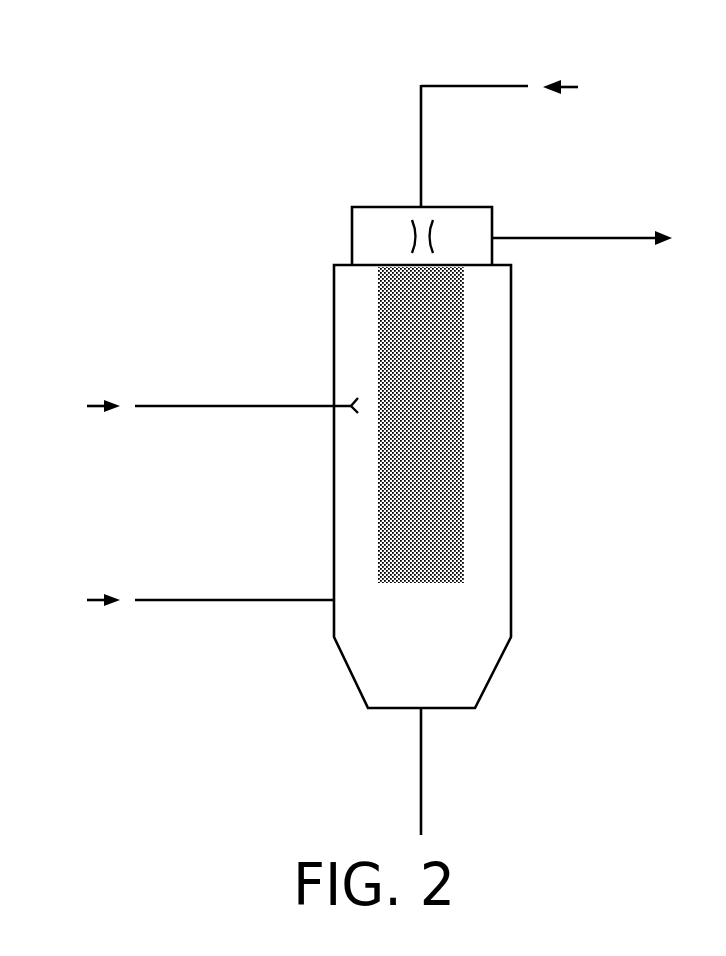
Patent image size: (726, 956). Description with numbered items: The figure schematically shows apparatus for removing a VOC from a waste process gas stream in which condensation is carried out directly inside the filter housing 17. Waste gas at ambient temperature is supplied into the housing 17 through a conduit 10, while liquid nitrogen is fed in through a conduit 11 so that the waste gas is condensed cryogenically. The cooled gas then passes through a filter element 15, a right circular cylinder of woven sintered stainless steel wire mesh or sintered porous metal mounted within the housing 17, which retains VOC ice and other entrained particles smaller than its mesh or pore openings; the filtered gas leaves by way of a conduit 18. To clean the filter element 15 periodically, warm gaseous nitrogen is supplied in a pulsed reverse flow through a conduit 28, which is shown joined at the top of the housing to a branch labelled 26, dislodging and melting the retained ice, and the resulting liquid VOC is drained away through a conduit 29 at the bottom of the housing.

The conduit 10 is at (210, 599).
The conduit 11 is at (210, 405).
The filter element 15 is at (463, 352).
The filter housing 17 is at (511, 528).
The conduit 18 is at (585, 237).
The gaseous nitrogen supply line (GAN) 26 is at (502, 85).
The conduit 28 is at (420, 118).
The conduit 29 is at (420, 762).